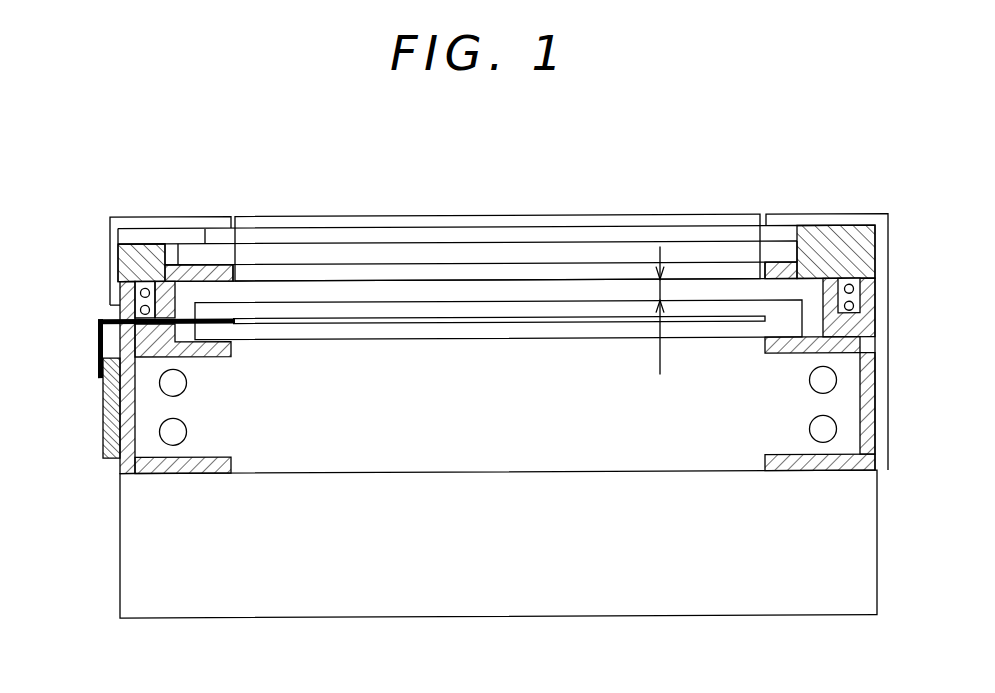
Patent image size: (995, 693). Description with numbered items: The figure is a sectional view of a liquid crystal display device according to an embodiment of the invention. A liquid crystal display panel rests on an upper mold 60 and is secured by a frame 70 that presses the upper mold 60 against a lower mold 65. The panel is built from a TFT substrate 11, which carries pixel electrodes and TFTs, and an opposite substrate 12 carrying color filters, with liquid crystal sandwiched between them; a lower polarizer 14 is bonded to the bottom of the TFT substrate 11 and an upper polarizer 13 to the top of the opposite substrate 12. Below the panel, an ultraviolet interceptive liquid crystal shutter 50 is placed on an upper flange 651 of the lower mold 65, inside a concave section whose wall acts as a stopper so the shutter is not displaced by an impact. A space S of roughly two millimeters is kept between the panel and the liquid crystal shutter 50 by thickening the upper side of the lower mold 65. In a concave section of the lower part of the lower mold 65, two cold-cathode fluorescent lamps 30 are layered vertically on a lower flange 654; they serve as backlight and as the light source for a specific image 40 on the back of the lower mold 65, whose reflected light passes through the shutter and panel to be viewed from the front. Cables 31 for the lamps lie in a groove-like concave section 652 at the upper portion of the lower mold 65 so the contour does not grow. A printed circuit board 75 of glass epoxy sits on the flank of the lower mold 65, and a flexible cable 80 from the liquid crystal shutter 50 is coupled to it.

The TFT substrate 11 is at (418, 250).
The opposite substrate 12 is at (357, 233).
The upper polarizer 13 is at (291, 222).
The lower polarizer 14 is at (487, 270).
The cold-cathode fluorescent lamp 30 is at (170, 433).
The cable 31 is at (127, 272).
The specific image 40 is at (455, 473).
The liquid crystal shutter 50 is at (590, 300).
The upper mold 60 is at (150, 244).
The lower mold 65 is at (103, 340).
The frame 70 is at (206, 217).
The printed circuit board 75 is at (103, 420).
The flexible cable 80 is at (97, 352).
The upper flange 651 is at (223, 357).
The concave section 652 is at (135, 292).
The lower flange 654 is at (232, 465).
The space S is at (650, 311).